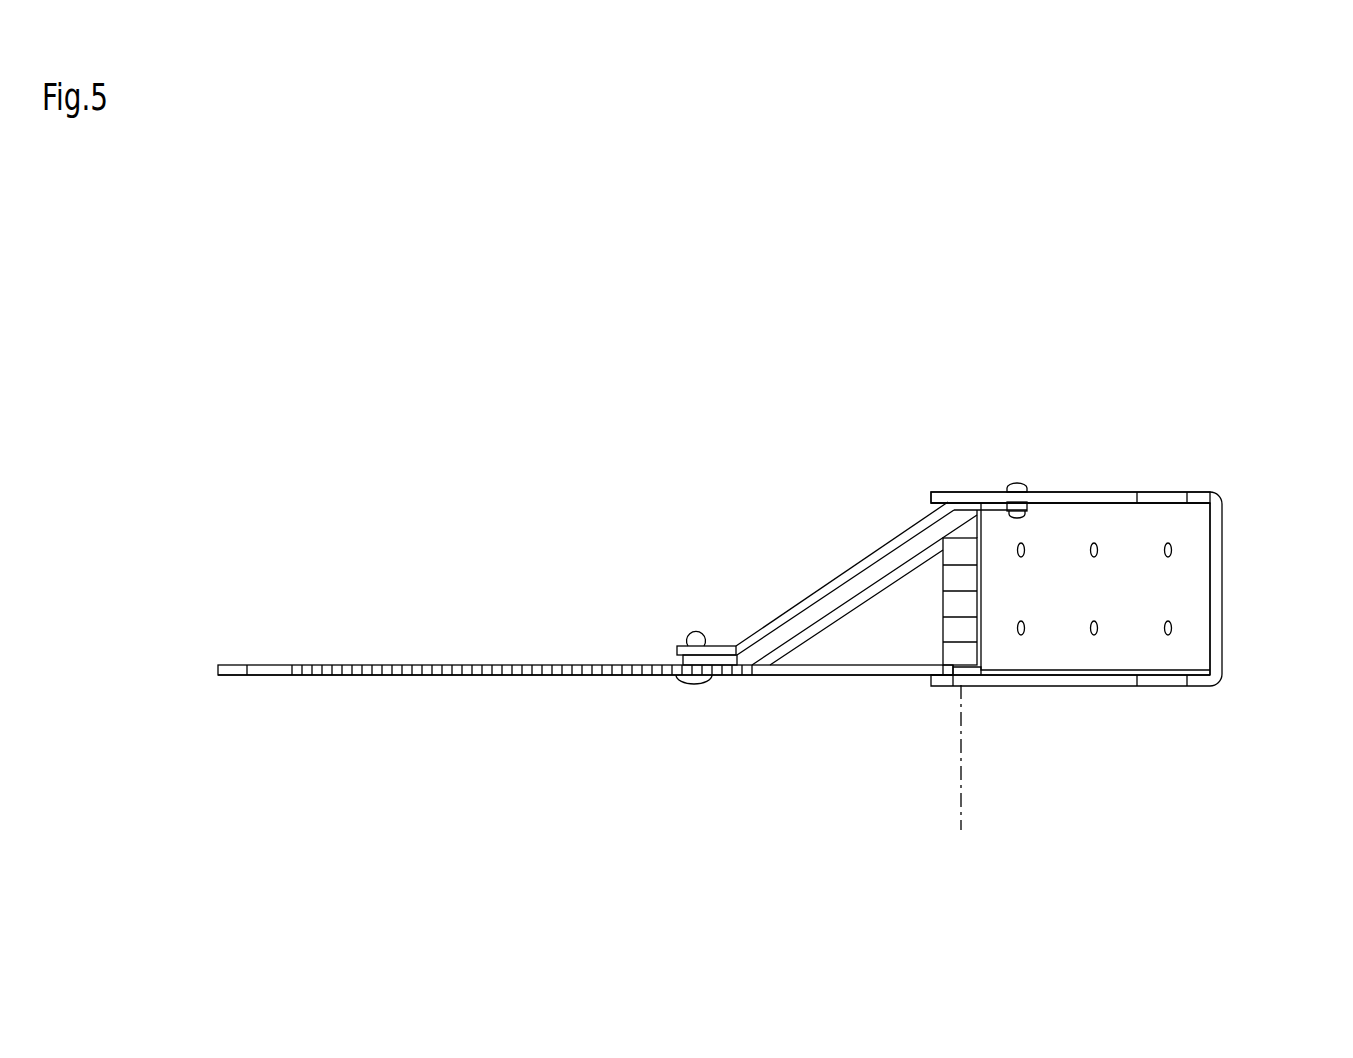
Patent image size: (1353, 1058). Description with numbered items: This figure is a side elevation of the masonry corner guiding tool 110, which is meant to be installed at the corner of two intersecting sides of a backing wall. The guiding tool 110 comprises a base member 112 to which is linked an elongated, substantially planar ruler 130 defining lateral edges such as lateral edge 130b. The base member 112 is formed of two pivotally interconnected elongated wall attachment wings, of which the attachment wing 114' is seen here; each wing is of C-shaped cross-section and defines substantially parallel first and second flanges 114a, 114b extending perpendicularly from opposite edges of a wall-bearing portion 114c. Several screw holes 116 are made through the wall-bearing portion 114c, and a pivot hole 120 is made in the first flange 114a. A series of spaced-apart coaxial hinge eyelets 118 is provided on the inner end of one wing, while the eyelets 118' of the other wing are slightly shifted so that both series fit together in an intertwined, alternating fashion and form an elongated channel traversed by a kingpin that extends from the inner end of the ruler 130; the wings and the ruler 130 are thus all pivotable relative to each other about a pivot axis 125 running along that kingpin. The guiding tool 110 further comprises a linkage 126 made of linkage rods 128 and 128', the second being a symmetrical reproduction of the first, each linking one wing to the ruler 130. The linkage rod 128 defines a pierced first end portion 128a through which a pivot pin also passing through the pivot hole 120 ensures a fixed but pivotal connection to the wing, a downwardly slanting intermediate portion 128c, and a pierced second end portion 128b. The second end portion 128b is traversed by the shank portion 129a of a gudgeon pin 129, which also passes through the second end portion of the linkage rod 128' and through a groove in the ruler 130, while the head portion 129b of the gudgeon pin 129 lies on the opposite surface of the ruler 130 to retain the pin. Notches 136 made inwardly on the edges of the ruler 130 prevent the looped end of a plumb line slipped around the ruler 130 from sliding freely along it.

The masonry corner guiding tool 110 is at (540, 358).
The base member 112 is at (1097, 490).
The wall attachment wing 114' is at (1130, 589).
The first flange 114a is at (1063, 493).
The second flange 114b is at (1112, 680).
The wall-bearing portion 114c is at (1190, 584).
The screw holes 116 is at (1165, 628).
The hinge eyelets 118 is at (883, 585).
The hinge eyelets 118' is at (919, 460).
The pivot hole 120 is at (1018, 483).
The pivot axis 125 is at (961, 808).
The linkage 126 is at (912, 528).
The linkage rod 128 is at (794, 574).
The first end portion 128a is at (972, 578).
The second end portion 128b is at (727, 664).
The intermediate portion 128c is at (838, 580).
The linkage rod 128' is at (864, 624).
The gudgeon pin 129 is at (690, 636).
The shank portion 129a is at (688, 644).
The head portion 129b is at (695, 682).
The ruler 130 is at (230, 662).
The lateral edge 130b is at (270, 674).
The notches 136 is at (380, 672).